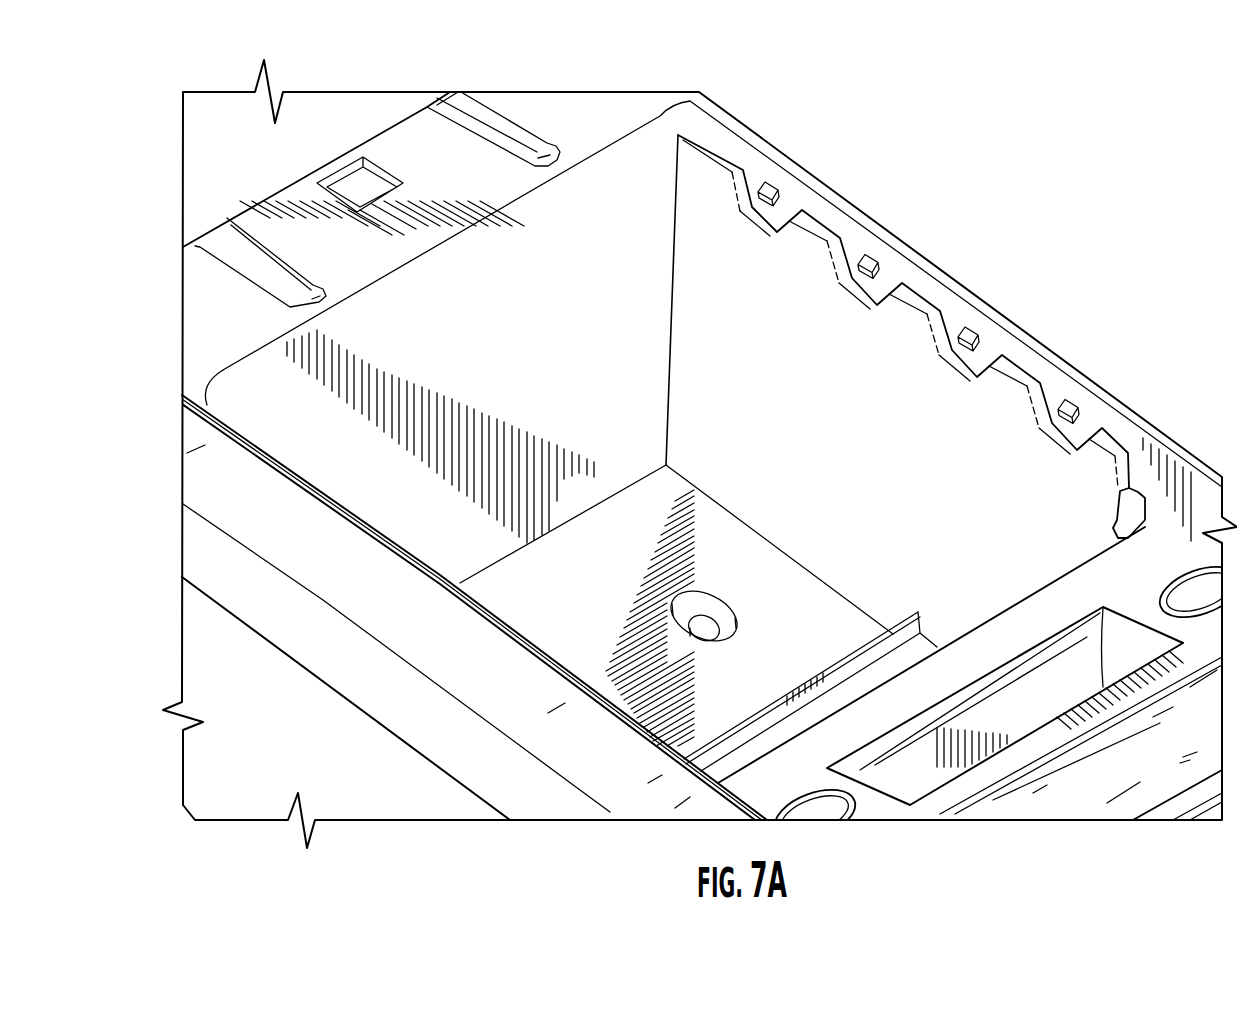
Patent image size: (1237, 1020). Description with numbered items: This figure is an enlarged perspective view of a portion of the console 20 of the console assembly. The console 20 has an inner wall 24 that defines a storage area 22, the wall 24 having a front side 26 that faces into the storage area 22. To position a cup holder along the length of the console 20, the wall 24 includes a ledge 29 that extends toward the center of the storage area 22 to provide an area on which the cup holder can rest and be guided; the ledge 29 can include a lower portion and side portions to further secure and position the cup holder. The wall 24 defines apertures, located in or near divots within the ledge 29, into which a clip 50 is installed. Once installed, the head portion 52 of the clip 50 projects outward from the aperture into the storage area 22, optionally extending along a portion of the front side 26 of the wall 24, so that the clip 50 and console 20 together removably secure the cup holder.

The console 20 is at (787, 144).
The storage area 22 is at (313, 433).
The wall 24 is at (920, 293).
The front side 26 is at (920, 293).
The ledge 29 is at (770, 207).
The clip 50 is at (1066, 400).
The head portion 52 is at (1074, 405).